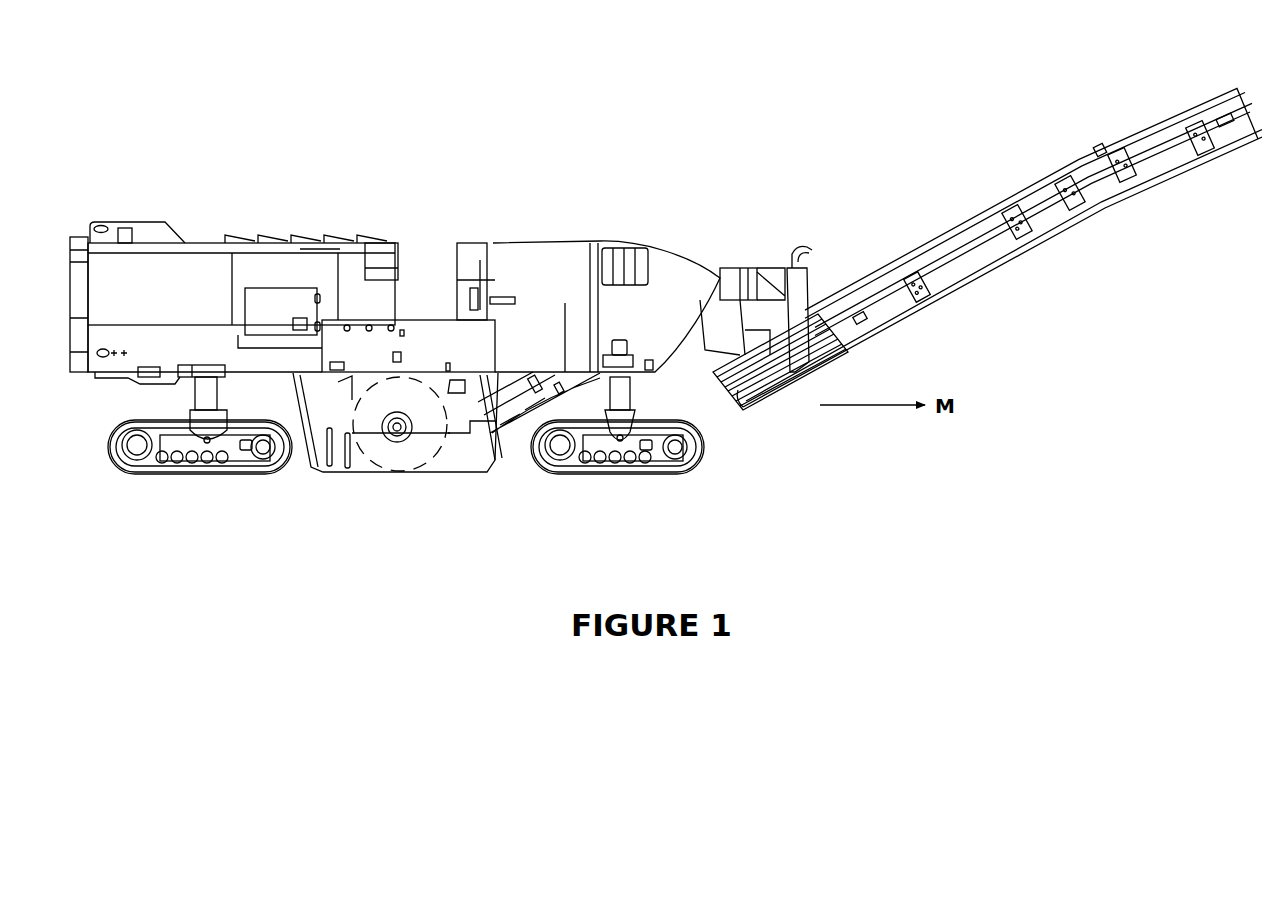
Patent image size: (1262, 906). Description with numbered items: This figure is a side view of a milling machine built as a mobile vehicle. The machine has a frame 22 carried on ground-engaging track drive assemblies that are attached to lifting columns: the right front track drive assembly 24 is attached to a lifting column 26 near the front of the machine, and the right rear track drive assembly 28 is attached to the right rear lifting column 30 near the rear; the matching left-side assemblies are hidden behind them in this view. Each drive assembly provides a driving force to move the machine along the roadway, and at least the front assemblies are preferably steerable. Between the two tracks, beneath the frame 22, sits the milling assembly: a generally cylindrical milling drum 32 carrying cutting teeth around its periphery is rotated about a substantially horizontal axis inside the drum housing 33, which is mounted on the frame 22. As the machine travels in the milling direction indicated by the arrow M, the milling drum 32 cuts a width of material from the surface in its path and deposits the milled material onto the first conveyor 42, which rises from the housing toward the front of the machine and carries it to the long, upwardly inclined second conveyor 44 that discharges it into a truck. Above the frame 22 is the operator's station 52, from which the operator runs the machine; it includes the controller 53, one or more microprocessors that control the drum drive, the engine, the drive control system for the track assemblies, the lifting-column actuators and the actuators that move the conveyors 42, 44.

The frame 22 is at (132, 390).
The right front track drive assembly 24 is at (700, 462).
The lifting column 26 is at (635, 393).
The right rear track drive assembly 28 is at (107, 470).
The right rear lifting column 30 is at (222, 402).
The milling drum 32 is at (447, 450).
The drum housing 33 is at (360, 480).
The first conveyor 42 is at (553, 400).
The second conveyor 44 is at (1015, 265).
The operator's station 52 is at (446, 272).
The controller 53 is at (520, 302).